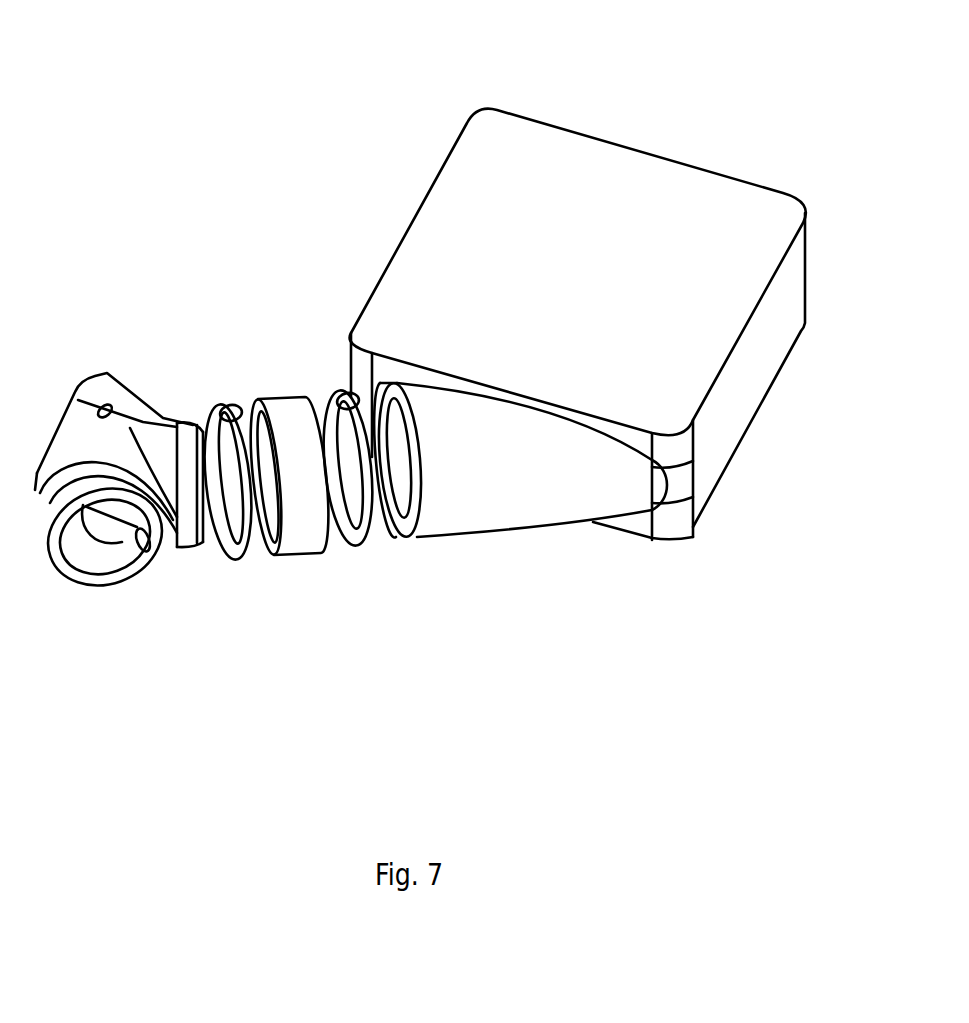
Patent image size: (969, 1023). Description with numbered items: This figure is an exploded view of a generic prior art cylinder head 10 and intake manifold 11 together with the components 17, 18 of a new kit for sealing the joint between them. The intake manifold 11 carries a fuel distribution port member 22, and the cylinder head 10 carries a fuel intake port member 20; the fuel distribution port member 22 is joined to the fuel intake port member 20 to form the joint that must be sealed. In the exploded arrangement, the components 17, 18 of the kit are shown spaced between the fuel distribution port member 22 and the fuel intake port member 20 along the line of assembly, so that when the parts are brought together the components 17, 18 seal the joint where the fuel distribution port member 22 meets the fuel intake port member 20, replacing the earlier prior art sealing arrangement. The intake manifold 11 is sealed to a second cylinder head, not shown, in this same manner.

The cylinder head 10 is at (600, 240).
The intake manifold 11 is at (77, 387).
The component of sealing kit 17 is at (345, 393).
The component of sealing kit 18 is at (286, 425).
The fuel intake port member 20 is at (405, 510).
The fuel distribution port member 22 is at (197, 537).